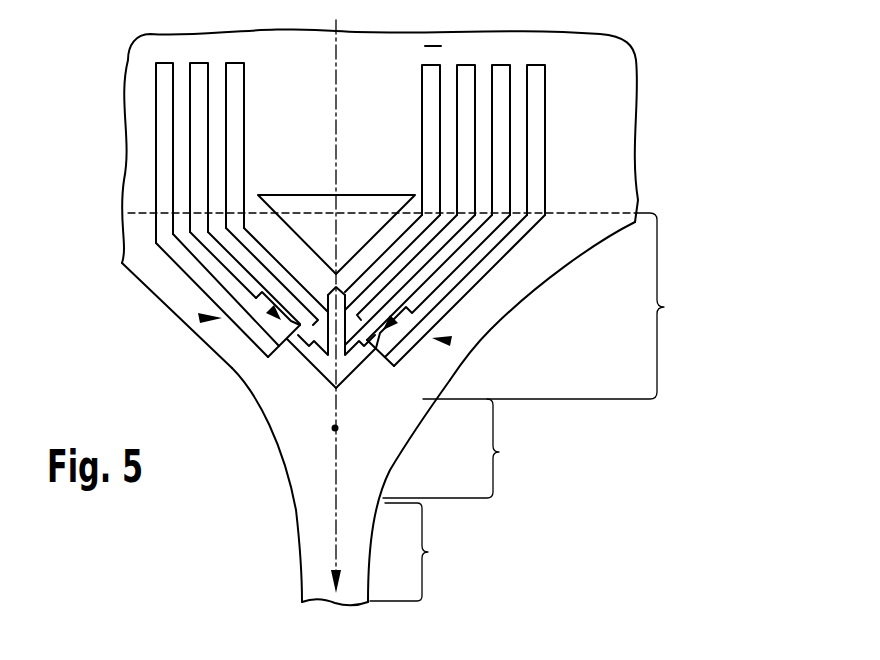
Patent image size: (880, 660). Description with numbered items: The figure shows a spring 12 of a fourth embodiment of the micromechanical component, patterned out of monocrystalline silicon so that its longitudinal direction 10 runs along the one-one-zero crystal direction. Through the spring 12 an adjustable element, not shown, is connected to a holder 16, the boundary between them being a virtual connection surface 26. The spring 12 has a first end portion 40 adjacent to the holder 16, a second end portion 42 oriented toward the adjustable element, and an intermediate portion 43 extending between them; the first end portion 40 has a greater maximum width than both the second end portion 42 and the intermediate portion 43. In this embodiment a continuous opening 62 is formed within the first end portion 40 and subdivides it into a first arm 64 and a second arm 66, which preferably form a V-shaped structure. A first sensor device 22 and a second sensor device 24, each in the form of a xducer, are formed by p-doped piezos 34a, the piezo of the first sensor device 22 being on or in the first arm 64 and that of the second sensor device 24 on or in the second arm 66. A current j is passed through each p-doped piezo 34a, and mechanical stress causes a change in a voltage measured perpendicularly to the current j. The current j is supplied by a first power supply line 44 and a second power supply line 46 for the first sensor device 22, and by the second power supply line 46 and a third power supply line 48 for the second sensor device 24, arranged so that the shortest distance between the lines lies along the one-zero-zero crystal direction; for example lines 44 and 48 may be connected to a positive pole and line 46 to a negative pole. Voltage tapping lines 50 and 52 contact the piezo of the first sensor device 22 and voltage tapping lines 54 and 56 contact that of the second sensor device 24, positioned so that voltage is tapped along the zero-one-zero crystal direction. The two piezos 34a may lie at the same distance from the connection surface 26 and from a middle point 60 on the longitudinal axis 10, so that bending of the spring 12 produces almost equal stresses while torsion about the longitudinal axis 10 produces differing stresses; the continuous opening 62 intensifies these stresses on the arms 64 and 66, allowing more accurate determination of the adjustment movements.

The longitudinal direction 10 is at (335, 527).
The spring 12 is at (420, 453).
The holder 16 is at (598, 153).
The first sensor device 22 is at (200, 320).
The second sensor device 24 is at (451, 342).
The connection surface 26 is at (598, 213).
The p-doped piezo 34a is at (279, 340).
The first end portion 40 is at (664, 307).
The second end portion 42 is at (428, 552).
The intermediate portion 43 is at (499, 452).
The first power supply line 44 is at (200, 118).
The second power supply line 46 is at (432, 83).
The third power supply line 48 is at (500, 120).
The voltage tapping line 50 is at (165, 82).
The voltage tapping line 52 is at (237, 83).
The voltage tapping line 54 is at (466, 120).
The voltage tapping line 56 is at (535, 83).
The middle point 60 is at (335, 428).
The continuous opening 62 is at (353, 236).
The first arm 64 is at (183, 295).
The second arm 66 is at (478, 302).
The current j is at (282, 344).